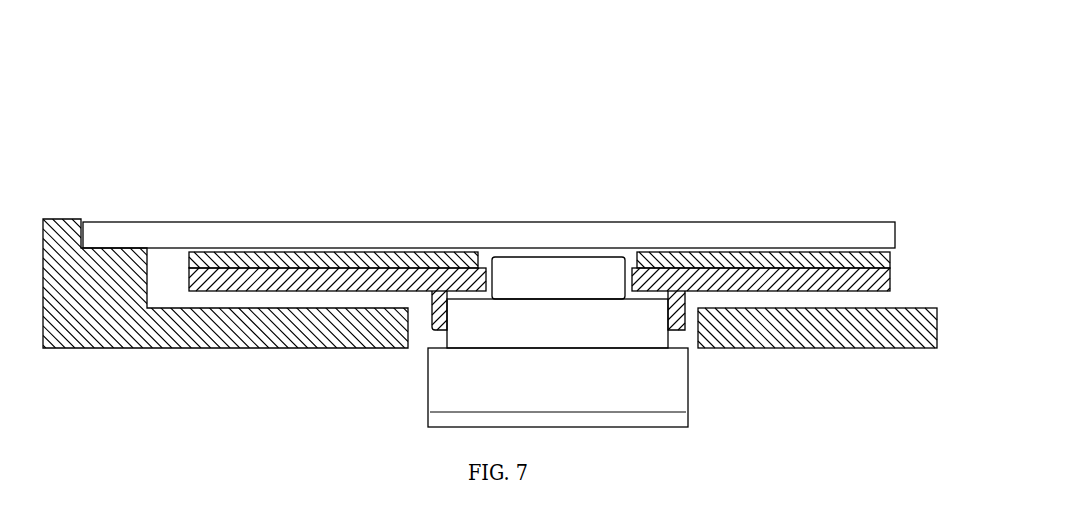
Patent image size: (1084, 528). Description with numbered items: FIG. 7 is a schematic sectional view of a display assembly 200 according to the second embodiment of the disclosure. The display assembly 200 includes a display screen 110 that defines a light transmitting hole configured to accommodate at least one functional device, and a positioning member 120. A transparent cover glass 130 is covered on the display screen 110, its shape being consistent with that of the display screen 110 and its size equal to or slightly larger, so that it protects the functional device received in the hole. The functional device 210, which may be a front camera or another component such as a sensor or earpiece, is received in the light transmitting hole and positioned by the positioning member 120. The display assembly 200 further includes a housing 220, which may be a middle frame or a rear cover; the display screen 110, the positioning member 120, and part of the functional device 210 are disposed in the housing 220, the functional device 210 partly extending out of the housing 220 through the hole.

The display assembly 200 is at (499, 227).
The cover glass 130 is at (177, 236).
The display screen 110 is at (680, 256).
The positioning member 120 is at (430, 255).
The functional device 210 is at (512, 260).
The housing 220 is at (833, 317).